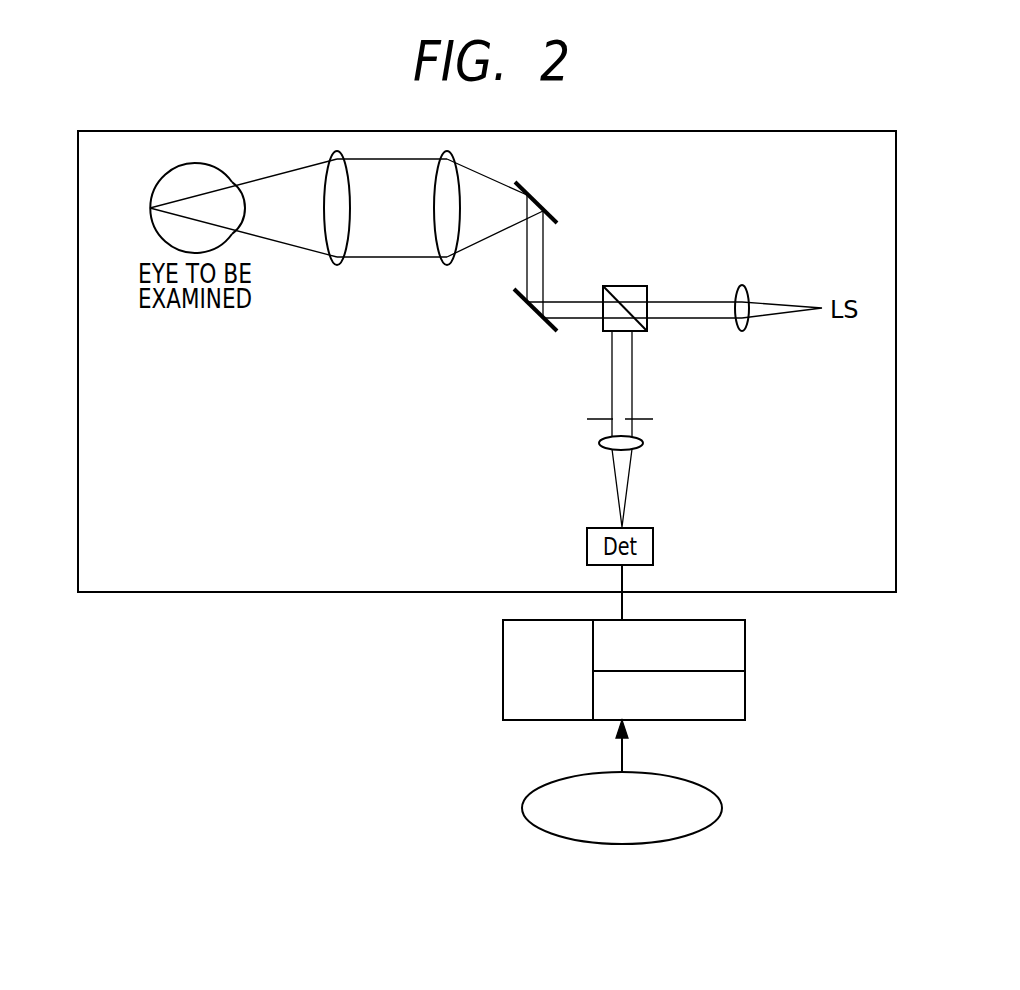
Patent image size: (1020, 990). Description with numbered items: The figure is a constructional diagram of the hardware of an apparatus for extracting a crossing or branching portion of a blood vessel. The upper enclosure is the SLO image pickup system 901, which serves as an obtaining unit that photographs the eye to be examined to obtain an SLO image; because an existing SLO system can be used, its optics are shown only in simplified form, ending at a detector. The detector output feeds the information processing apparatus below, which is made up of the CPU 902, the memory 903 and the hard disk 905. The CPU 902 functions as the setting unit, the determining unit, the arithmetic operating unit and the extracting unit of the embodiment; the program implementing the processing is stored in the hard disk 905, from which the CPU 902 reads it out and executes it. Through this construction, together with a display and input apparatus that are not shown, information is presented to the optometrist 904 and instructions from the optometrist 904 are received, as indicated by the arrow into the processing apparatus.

The SLO image pickup system 901 is at (182, 592).
The CPU 902 is at (745, 643).
The memory 903 is at (745, 693).
The optometrist 904 is at (722, 805).
The hard disk 905 is at (503, 669).